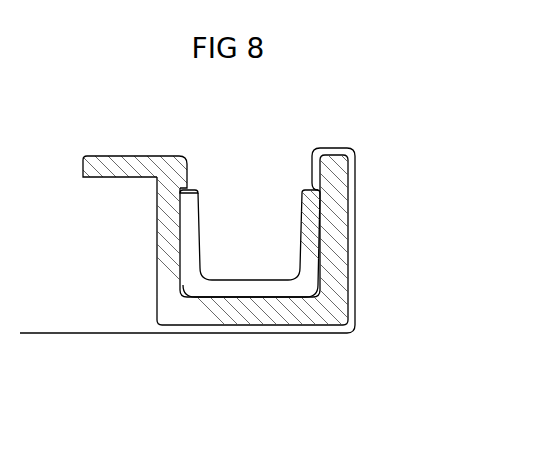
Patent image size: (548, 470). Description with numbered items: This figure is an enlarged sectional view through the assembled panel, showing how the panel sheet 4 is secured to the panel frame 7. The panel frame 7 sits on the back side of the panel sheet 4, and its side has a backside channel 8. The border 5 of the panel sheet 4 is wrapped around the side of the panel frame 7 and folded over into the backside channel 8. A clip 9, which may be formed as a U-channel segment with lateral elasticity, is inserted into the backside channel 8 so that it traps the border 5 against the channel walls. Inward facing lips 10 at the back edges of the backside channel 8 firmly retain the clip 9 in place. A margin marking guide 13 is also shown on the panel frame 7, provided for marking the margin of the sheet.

The panel sheet 4 is at (93, 332).
The border 5 is at (322, 148).
The panel frame 7 is at (157, 233).
The backside channel 8 is at (180, 265).
The clip 9 is at (252, 282).
The inward facing lip 10 is at (187, 170).
The margin marking guide 13 is at (83, 160).